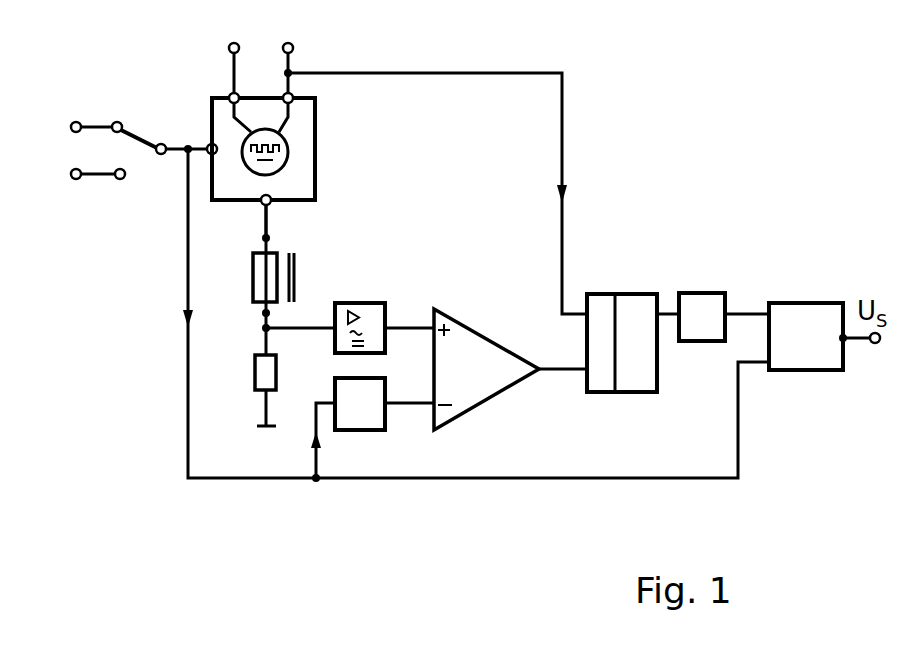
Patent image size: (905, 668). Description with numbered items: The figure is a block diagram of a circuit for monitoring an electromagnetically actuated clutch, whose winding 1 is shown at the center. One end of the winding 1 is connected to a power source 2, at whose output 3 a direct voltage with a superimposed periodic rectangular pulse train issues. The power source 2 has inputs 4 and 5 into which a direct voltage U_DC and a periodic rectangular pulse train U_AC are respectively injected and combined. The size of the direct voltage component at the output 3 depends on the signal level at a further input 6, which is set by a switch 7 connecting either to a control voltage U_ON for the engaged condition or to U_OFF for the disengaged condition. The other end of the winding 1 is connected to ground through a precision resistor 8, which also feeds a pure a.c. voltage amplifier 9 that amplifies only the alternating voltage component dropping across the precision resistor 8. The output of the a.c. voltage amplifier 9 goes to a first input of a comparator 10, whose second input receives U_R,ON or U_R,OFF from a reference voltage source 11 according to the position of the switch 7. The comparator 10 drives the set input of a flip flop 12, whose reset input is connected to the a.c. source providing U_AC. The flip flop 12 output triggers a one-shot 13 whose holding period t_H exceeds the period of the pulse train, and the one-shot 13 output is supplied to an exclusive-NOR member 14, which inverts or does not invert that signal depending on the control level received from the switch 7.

The winding 1 is at (272, 268).
The power source 2 is at (310, 140).
The output 3 is at (266, 215).
The input 4 is at (230, 72).
The input 5 is at (292, 87).
The further input 6 is at (200, 145).
The switch 7 is at (135, 117).
The precision resistor 8 is at (255, 385).
The a.c. voltage amplifier 9 is at (370, 310).
The comparator 10 is at (485, 388).
The reference voltage source 11 is at (377, 432).
The flip flop 12 is at (632, 380).
The one-shot 13 is at (707, 333).
The exclusive-NOR member 14 is at (820, 363).